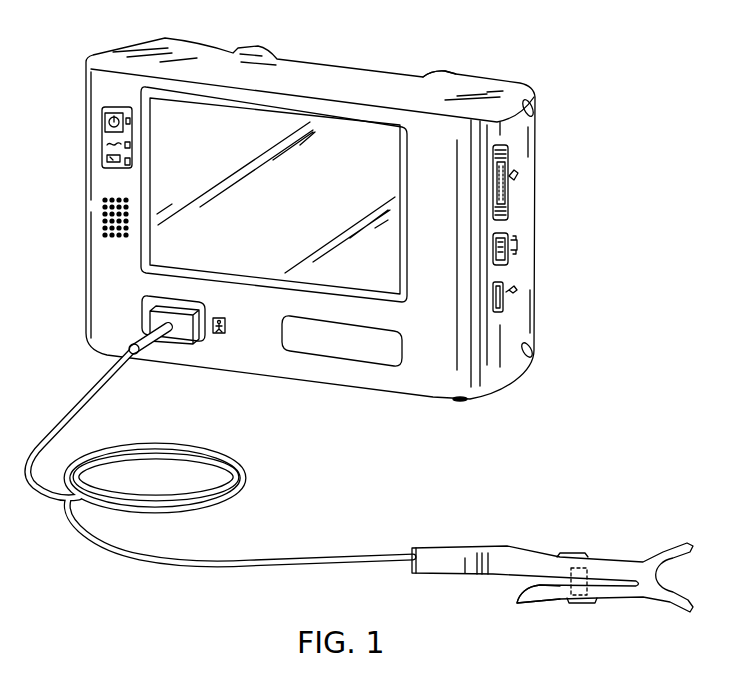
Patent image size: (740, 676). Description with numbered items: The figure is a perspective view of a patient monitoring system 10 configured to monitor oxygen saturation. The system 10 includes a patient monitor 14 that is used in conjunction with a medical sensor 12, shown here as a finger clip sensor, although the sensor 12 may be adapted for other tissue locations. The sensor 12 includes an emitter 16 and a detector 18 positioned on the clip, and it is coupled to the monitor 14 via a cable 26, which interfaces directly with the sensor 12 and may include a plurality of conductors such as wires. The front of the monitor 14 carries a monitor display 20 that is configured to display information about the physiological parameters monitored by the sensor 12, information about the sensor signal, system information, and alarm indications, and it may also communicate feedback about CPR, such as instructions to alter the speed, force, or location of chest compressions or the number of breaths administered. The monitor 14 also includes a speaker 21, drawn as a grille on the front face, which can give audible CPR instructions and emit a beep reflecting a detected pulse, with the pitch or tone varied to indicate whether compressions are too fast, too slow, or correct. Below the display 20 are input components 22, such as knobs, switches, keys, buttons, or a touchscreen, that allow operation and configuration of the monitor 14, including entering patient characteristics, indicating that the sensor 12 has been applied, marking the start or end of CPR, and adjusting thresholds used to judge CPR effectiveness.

The patient monitoring system 10 is at (310, 219).
The medical sensor 12 is at (629, 508).
The patient monitor 14 is at (437, 71).
The emitter 16 is at (578, 566).
The detector 18 is at (582, 599).
The monitor display 20 is at (248, 250).
The speaker 21 is at (104, 222).
The input components 22 is at (383, 353).
The cable 26 is at (312, 554).